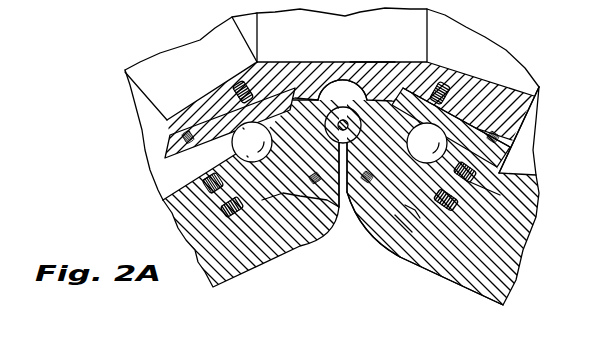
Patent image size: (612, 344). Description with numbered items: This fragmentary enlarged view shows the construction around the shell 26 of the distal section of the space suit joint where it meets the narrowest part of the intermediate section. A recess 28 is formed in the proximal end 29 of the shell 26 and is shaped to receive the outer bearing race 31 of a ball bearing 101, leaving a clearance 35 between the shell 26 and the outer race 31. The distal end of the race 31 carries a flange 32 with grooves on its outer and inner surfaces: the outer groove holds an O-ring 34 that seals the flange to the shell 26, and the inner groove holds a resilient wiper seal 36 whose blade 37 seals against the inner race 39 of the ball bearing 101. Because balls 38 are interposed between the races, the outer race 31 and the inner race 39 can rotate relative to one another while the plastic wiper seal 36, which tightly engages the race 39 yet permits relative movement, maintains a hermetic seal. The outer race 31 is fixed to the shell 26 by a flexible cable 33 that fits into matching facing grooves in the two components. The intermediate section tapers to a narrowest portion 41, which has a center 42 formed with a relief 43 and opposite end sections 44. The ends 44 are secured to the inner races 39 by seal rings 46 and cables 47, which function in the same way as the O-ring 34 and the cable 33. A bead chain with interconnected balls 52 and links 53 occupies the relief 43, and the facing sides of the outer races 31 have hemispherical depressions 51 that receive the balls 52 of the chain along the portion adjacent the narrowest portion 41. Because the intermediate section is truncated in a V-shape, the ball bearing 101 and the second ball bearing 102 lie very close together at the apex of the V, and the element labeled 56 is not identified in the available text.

The shell 26 is at (463, 280).
The recess 28 is at (405, 222).
The proximal end 29 is at (403, 257).
The outer bearing race 31 is at (398, 135).
The flange 32 is at (468, 205).
The flexible cable 33 is at (330, 214).
The O-ring 34 is at (452, 228).
The clearance 35 is at (412, 208).
The resilient wiper seal 36 is at (485, 190).
The blade 37 is at (495, 175).
The balls 38 is at (455, 130).
The inner race 39 is at (500, 168).
The narrowest portion 41 is at (403, 67).
The center 42 is at (340, 62).
The relief 43 is at (372, 62).
The end sections 44 is at (204, 100).
The seal rings 46 is at (444, 90).
The cables 47 is at (497, 137).
The hemispherical depressions 51 is at (320, 140).
The balls 52 is at (340, 121).
The links 53 is at (304, 99).
The left jaw member 56 is at (248, 262).
The ball bearing 101 is at (470, 126).
The ball bearing 102 is at (222, 133).